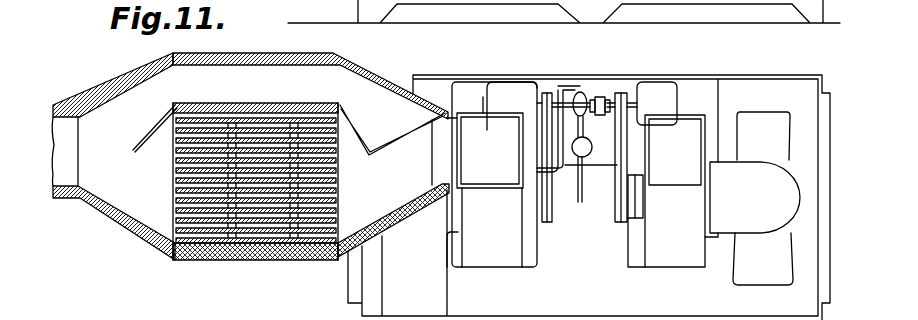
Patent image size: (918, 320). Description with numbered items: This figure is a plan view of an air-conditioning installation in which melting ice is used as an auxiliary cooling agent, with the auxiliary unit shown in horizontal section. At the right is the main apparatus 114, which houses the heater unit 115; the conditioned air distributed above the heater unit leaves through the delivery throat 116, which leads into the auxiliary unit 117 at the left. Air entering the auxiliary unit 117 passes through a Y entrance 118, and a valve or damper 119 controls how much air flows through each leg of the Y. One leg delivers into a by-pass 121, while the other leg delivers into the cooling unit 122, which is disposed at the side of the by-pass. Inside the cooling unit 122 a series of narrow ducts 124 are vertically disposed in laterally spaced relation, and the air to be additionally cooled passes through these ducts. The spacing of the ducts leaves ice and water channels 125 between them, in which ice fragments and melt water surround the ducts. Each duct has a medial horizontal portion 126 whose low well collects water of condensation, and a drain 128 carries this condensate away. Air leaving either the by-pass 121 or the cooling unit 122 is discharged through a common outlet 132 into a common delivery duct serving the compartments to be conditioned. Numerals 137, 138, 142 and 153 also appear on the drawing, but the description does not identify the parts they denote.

The main apparatus 114 is at (760, 73).
The heater unit 115 is at (496, 198).
The delivery throat 116 is at (494, 174).
The auxiliary unit 117 is at (280, 48).
The Y entrance 118 is at (414, 221).
The valve or damper 119 is at (394, 139).
The by-pass 121 is at (140, 97).
The cooling unit 122 is at (163, 214).
The narrow ducts 124 is at (173, 184).
The ice and water channels 125 is at (200, 214).
The medial horizontal portion 126 is at (266, 150).
The drain 128 is at (230, 242).
The common outlet 132 is at (62, 120).
The support 137 is at (178, 314).
The base 138 is at (223, 313).
The conduit 142 is at (328, 314).
The valve 153 is at (275, 313).